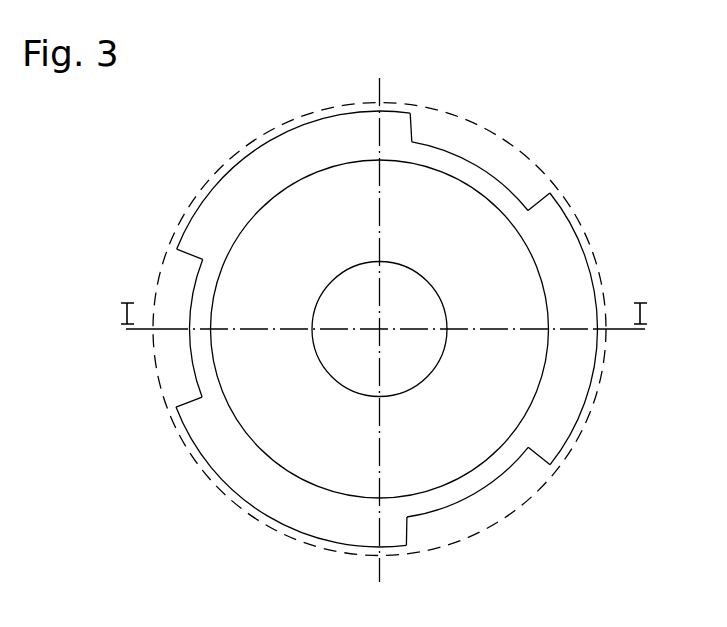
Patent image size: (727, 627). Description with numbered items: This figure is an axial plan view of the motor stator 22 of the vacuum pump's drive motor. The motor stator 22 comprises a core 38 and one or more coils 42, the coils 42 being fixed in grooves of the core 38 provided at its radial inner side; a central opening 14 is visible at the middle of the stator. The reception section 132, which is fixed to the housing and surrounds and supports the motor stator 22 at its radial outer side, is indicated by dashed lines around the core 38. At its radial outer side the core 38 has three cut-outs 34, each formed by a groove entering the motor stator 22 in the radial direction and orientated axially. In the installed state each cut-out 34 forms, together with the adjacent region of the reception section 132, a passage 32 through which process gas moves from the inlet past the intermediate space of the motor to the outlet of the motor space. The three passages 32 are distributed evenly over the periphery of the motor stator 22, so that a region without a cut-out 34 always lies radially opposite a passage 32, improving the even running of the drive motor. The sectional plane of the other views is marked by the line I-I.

The central opening 14 is at (380, 330).
The motor stator 22 is at (443, 127).
The passage 32 is at (498, 160).
The cut-out 34 is at (517, 190).
The core 38 is at (223, 203).
The coil 42 is at (320, 204).
The reception section 132 is at (485, 125).